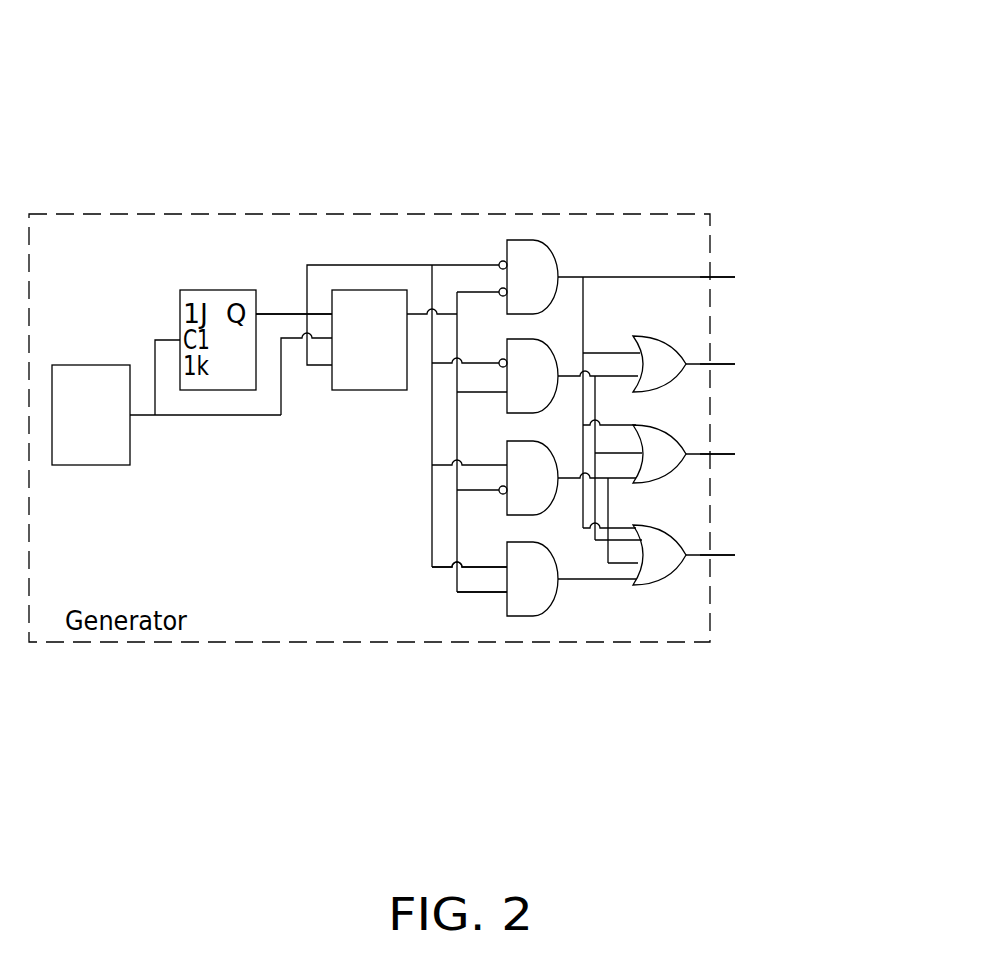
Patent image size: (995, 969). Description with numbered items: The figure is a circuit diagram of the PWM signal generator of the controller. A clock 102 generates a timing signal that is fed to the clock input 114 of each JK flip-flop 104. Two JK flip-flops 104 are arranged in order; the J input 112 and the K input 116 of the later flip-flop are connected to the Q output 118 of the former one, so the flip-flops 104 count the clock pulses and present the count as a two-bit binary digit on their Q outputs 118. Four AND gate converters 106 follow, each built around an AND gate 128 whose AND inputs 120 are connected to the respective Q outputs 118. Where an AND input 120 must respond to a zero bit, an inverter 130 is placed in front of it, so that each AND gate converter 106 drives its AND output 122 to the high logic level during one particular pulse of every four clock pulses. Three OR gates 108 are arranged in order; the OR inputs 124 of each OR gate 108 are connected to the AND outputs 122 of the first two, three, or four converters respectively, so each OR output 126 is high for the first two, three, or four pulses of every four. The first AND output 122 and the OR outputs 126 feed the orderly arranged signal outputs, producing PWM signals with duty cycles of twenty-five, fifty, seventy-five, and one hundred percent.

The clock 102 is at (88, 382).
The JK flip-flop 104 is at (388, 373).
The AND gate converter 106 is at (507, 361).
The OR gate 108 is at (665, 337).
The J input 112 is at (330, 314).
The clock input 114 is at (332, 338).
The K input 116 is at (332, 365).
The Q output 118 is at (319, 331).
The AND input 120 is at (505, 592).
The AND output 122 is at (631, 392).
The OR input 124 is at (630, 337).
The OR output 126 is at (786, 435).
The AND gate 128 is at (545, 239).
The inverter 130 is at (500, 289).